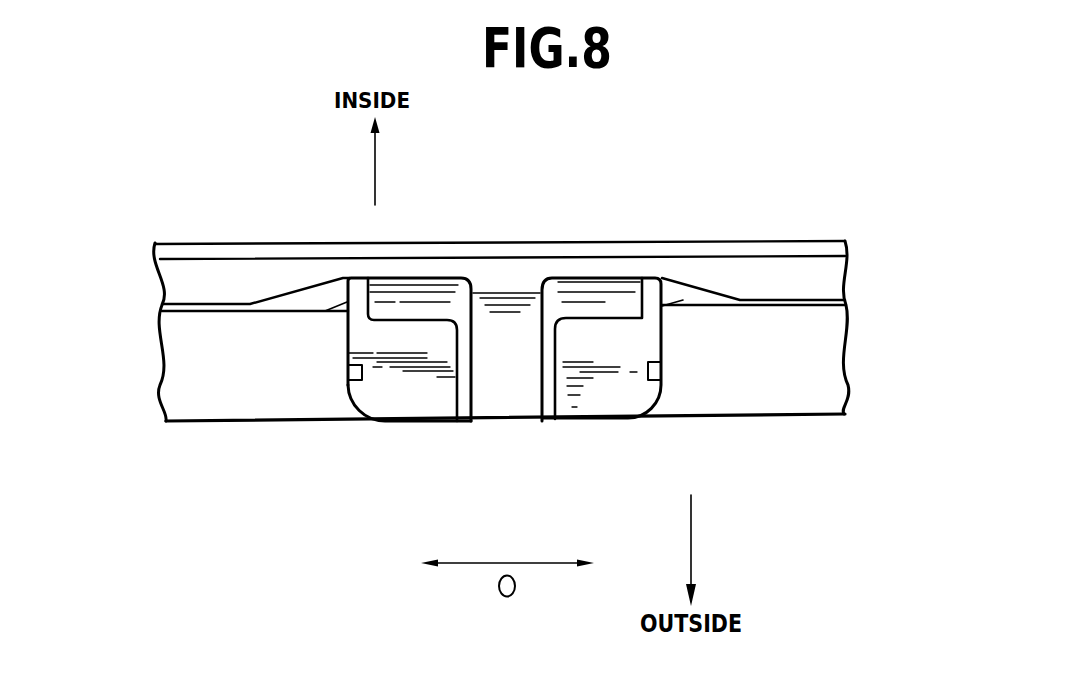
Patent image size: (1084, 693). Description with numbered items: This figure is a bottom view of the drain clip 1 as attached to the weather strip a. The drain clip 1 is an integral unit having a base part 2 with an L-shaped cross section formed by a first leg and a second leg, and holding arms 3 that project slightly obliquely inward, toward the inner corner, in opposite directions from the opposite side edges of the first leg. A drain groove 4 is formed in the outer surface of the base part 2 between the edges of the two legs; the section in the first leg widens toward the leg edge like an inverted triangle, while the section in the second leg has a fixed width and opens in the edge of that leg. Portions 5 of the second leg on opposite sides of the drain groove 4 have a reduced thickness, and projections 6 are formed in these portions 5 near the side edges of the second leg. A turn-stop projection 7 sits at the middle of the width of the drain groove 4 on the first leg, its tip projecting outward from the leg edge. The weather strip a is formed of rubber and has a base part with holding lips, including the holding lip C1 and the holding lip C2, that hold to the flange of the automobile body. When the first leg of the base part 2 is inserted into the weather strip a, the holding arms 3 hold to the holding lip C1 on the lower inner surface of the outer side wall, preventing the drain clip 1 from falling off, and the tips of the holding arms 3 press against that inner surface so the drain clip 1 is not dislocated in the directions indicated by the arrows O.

The drain clip 1 is at (316, 378).
The base part 2 is at (602, 420).
The holding arms 3 is at (300, 297).
The drain groove 4 is at (515, 383).
The portions 5 is at (415, 380).
The projections 6 is at (350, 380).
The turn-stop projection 7 is at (507, 283).
The weather strip a is at (217, 243).
The holding lip C1 is at (797, 327).
The holding lip C2 is at (797, 273).